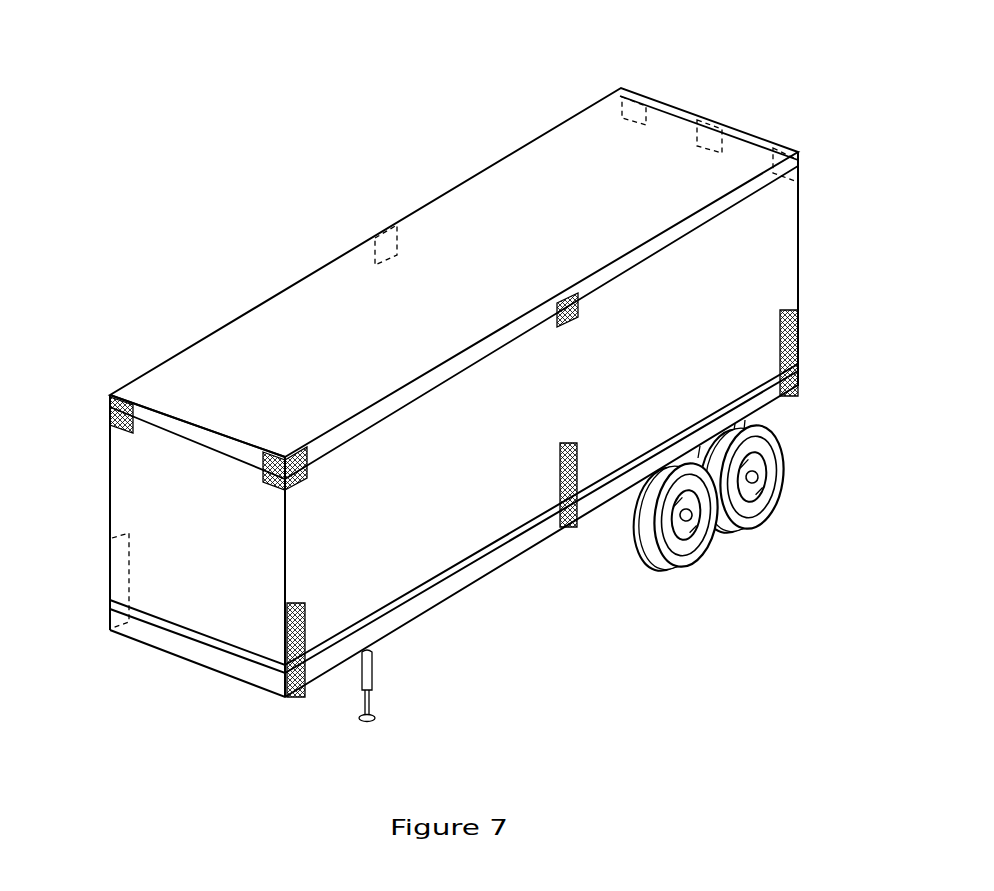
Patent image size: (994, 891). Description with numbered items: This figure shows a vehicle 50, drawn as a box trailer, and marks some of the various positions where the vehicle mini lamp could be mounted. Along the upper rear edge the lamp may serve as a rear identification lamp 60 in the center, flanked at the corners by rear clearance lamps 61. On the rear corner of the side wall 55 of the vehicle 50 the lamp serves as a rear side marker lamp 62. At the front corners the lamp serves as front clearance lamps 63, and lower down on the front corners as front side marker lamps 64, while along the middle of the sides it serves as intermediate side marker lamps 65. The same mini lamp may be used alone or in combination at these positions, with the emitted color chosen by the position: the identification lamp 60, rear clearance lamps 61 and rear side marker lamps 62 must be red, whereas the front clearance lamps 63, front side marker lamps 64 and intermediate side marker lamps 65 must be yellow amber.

The vehicle 50 is at (232, 181).
The side wall 55 is at (798, 264).
The rear identification lamp 60 is at (710, 115).
The rear clearance lamps 61 is at (622, 94).
The rear side marker lamps 62 is at (797, 398).
The front clearance lamps 63 is at (110, 412).
The front side marker lamps 64 is at (296, 460).
The intermediate side marker lamps 65 is at (385, 234).